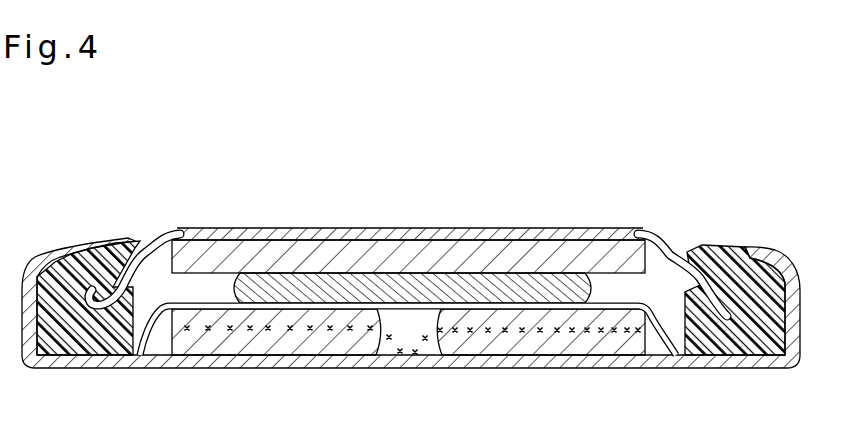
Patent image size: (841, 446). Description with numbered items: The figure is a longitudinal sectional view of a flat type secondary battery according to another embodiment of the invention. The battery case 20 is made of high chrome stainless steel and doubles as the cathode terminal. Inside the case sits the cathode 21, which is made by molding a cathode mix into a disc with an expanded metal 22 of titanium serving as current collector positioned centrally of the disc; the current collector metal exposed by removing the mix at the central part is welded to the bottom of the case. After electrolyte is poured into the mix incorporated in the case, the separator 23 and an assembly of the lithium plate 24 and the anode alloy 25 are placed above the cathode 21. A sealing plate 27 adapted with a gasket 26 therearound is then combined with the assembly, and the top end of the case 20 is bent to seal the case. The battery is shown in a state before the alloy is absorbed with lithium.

The battery case 20 is at (212, 363).
The cathode 21 is at (340, 345).
The expanded metal 22 is at (603, 332).
The separator 23 is at (145, 340).
The lithium plate 24 is at (513, 282).
The anode alloy 25 is at (432, 250).
The gasket 26 is at (731, 252).
The sealing plate 27 is at (216, 232).